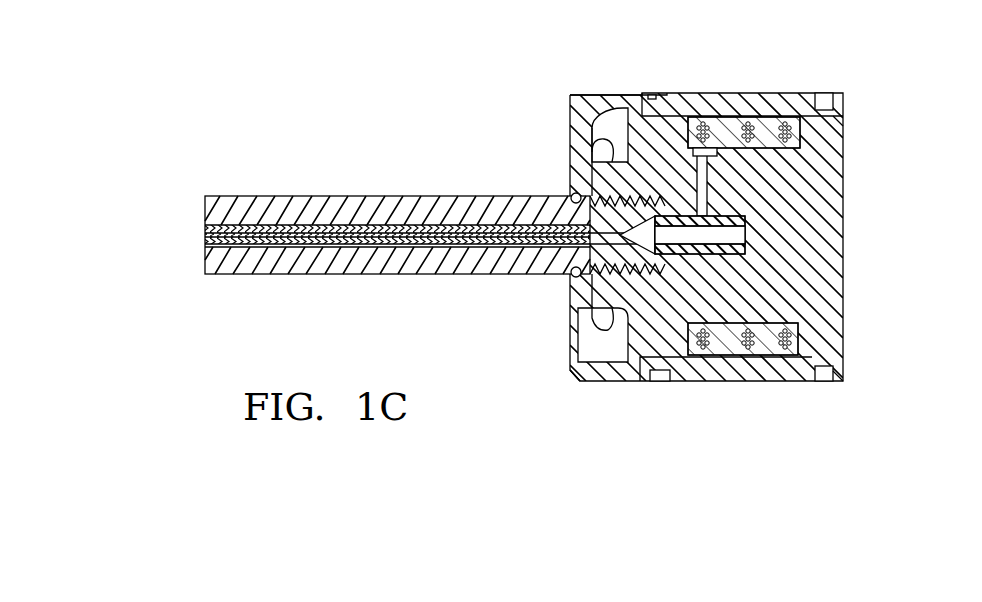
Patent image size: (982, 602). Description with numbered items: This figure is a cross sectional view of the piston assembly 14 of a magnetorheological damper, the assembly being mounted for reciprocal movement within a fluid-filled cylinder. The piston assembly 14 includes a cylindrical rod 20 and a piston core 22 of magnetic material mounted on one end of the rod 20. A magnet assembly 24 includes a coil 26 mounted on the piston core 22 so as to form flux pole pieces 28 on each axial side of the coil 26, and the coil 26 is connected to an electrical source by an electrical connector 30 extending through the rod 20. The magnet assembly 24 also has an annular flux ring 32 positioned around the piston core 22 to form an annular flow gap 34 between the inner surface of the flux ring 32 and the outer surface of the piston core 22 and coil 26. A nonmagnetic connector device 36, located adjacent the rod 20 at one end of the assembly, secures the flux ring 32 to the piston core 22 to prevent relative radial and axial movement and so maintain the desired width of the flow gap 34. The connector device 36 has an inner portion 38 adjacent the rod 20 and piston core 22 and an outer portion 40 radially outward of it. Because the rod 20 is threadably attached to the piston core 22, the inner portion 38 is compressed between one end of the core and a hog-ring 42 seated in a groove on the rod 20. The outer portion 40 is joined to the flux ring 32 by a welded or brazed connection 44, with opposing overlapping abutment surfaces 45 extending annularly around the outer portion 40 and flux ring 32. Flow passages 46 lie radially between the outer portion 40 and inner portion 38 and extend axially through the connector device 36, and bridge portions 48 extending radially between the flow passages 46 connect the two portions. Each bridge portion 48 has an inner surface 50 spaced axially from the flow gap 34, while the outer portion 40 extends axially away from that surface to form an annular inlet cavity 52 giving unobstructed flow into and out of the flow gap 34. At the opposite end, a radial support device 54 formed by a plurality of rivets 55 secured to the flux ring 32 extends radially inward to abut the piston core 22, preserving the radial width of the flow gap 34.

The piston assembly 14 is at (856, 80).
The cylindrical rod 20 is at (330, 272).
The piston core 22 is at (836, 238).
The magnet assembly 24 is at (806, 322).
The coil 26 is at (750, 117).
The flux pole pieces 28 is at (832, 140).
The electrical connector 30 is at (268, 243).
The annular flux ring 32 is at (712, 92).
The annular flow gap 34 is at (748, 358).
The connector device 36 is at (590, 88).
The inner portion 38 is at (580, 300).
The outer portion 40 is at (612, 92).
The hog-ring 42 is at (574, 272).
The welded or brazed connection 44 is at (664, 90).
The abutment surfaces 45 is at (656, 96).
The flow passages 46 is at (572, 360).
The bridge portions 48 is at (580, 150).
The inner surface 50 is at (598, 127).
The inlet cavity 52 is at (600, 118).
The radial support device 54 is at (832, 387).
The rivets 55 is at (822, 92).